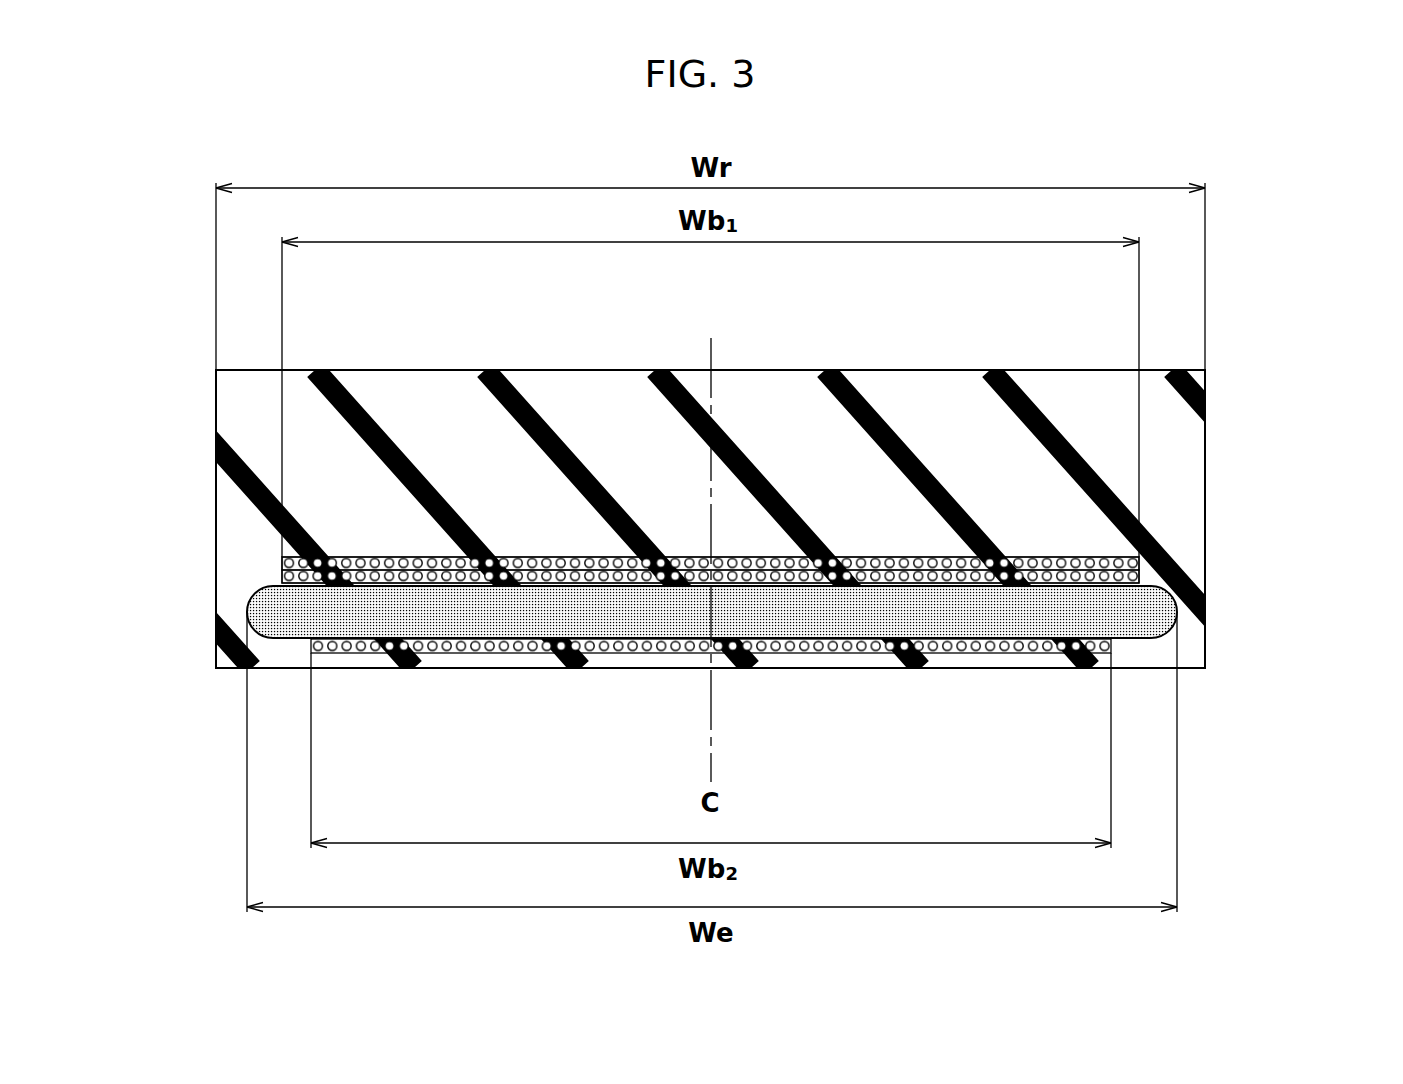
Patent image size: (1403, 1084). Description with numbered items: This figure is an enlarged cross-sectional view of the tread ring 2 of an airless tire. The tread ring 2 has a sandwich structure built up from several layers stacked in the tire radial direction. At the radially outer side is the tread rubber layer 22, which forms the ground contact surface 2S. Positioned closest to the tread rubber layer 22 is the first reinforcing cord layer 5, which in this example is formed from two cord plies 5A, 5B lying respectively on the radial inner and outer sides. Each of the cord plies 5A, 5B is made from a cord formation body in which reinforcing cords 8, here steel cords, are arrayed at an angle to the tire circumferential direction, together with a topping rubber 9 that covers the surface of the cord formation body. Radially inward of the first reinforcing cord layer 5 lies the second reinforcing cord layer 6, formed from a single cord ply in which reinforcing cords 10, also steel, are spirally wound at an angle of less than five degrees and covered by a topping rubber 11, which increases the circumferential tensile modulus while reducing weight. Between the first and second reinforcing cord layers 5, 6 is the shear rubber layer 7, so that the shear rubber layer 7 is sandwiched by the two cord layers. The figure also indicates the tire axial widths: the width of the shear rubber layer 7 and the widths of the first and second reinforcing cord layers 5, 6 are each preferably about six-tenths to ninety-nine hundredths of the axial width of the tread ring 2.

The tread ring 2 is at (1252, 368).
The ground contact surface 2S is at (932, 370).
The tread rubber layer 22 is at (252, 418).
The first reinforcing cord layer 5 is at (1327, 397).
The cord ply 5A is at (1110, 582).
The cord ply 5B is at (1082, 553).
The second reinforcing cord layer 6 is at (993, 648).
The shear rubber layer 7 is at (531, 615).
The reinforcing cords 8 is at (533, 560).
The topping rubber 9 is at (583, 560).
The reinforcing cords 10 is at (787, 648).
The topping rubber 11 is at (867, 648).